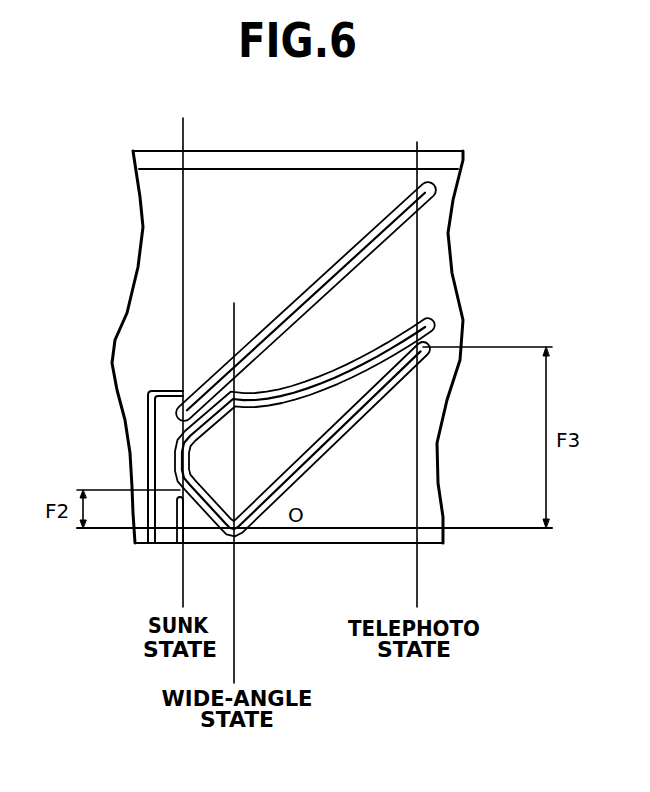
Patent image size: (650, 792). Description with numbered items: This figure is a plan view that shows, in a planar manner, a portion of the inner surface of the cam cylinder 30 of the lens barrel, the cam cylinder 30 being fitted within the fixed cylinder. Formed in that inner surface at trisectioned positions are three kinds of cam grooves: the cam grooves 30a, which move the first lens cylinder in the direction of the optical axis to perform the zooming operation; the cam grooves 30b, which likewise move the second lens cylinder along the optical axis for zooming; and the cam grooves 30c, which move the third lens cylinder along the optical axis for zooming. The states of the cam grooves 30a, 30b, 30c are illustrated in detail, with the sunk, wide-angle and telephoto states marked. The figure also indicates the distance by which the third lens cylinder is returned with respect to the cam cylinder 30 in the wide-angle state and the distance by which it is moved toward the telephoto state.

The cam cylinder 30 is at (162, 198).
The cam grooves 30a is at (285, 323).
The cam grooves 30b is at (408, 328).
The cam grooves 30c is at (378, 389).